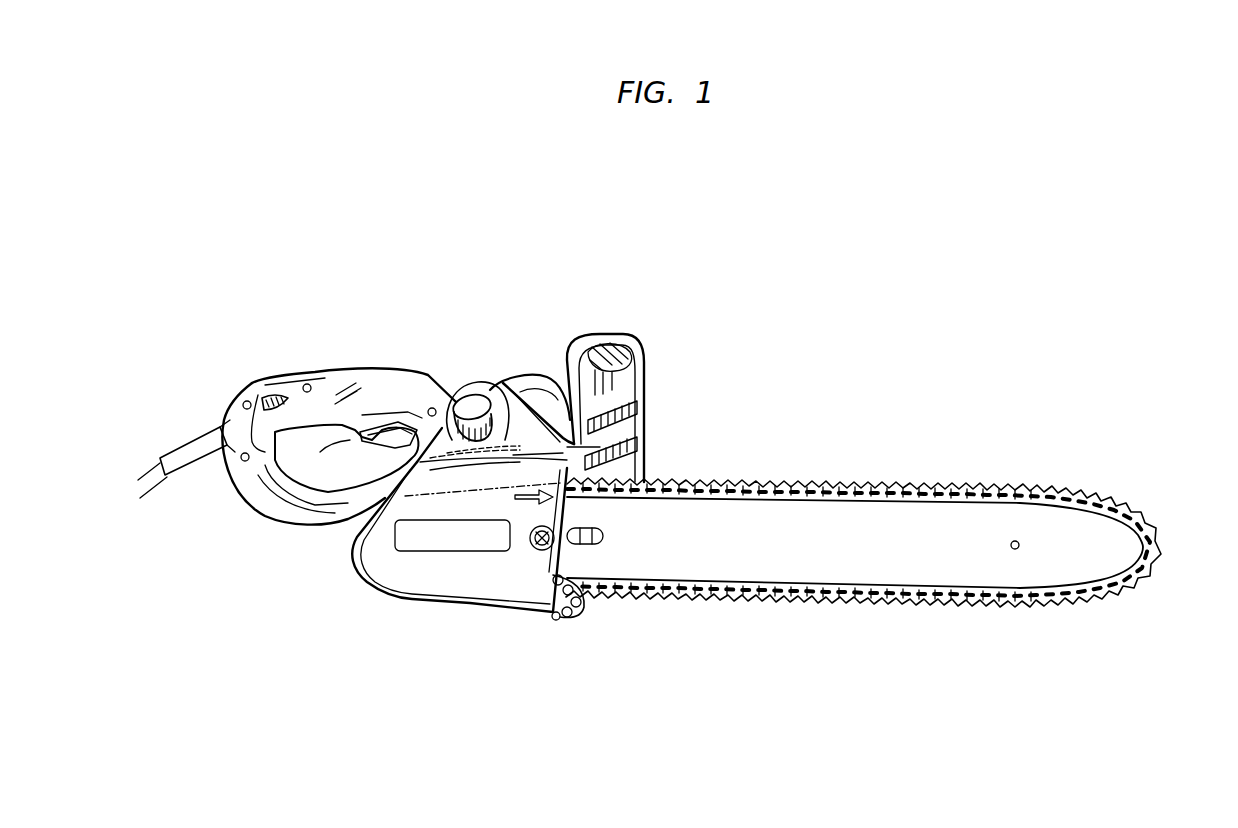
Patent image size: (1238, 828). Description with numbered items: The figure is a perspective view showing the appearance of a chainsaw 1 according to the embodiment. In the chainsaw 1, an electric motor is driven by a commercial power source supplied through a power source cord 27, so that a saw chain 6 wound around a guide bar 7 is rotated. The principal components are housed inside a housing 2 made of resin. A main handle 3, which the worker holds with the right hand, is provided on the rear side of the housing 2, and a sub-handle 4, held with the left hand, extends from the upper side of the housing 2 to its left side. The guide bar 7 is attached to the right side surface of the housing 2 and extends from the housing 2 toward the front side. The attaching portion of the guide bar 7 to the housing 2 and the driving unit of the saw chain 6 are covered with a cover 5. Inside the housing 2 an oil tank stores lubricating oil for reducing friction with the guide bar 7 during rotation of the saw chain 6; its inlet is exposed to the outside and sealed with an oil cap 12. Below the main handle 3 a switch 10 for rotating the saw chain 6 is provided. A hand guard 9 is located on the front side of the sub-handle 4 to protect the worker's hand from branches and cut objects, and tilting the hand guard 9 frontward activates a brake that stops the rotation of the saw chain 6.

The chainsaw 1 is at (1098, 308).
The housing 2 is at (500, 382).
The main handle 3 is at (287, 388).
The sub-handle 4 is at (547, 380).
The cover 5 is at (462, 572).
The saw chain 6 is at (838, 478).
The guide bar 7 is at (917, 555).
The hand guard 9 is at (627, 373).
The switch 10 is at (370, 438).
The oil cap 12 is at (427, 370).
The power source cord 27 is at (152, 468).